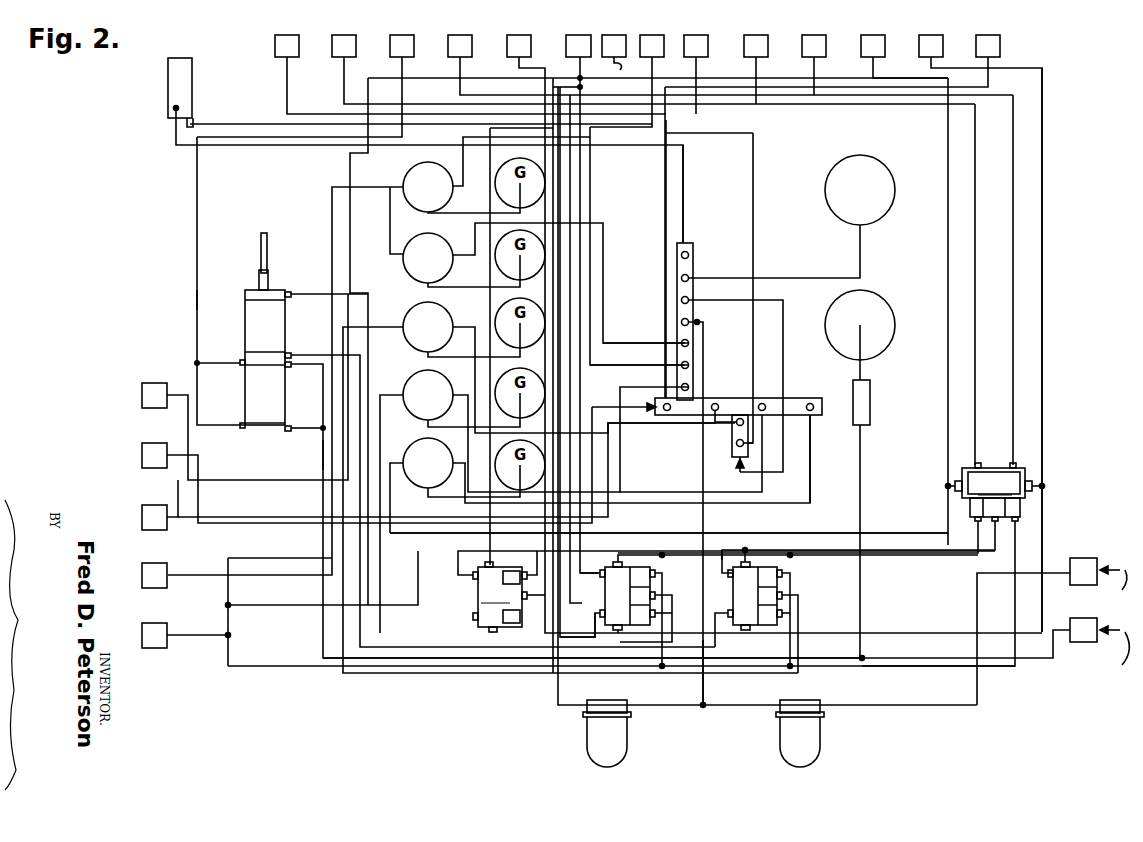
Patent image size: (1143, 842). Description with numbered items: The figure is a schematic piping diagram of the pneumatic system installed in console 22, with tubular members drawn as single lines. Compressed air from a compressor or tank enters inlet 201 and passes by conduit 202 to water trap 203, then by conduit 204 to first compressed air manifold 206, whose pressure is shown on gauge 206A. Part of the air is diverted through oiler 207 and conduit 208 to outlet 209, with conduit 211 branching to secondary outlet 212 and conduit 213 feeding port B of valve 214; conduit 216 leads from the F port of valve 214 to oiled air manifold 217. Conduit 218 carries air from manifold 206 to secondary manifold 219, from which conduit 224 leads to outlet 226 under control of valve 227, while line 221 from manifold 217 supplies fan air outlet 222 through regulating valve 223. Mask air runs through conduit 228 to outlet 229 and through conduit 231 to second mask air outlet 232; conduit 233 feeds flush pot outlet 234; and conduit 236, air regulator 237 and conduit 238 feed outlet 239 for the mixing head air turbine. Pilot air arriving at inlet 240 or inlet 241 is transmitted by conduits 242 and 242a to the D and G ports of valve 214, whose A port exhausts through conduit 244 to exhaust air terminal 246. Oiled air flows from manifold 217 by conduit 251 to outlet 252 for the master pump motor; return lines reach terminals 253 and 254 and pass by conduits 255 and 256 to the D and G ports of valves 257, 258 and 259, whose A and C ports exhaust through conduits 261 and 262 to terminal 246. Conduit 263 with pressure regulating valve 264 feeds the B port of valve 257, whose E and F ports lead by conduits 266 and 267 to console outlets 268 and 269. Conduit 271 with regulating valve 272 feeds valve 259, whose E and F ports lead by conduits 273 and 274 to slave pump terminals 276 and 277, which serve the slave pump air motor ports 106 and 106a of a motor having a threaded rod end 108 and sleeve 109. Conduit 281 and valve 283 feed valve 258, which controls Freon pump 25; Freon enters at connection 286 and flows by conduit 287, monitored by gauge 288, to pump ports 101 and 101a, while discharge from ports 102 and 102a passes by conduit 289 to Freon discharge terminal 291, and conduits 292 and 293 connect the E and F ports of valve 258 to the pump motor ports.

The console 22 is at (184, 266).
The Freon pump 25 is at (296, 342).
The Freon pump port 101 is at (291, 426).
The Freon pump port 101a is at (291, 367).
The Freon pump discharge port 102 is at (242, 429).
The Freon pump discharge port 102a is at (240, 361).
The lower air port 106 is at (291, 356).
The upper air port 106a is at (291, 293).
The upper end of rod 108 is at (267, 250).
The internally threaded sleeve 109 is at (266, 280).
The inlet 201 is at (1088, 562).
The conduit 202 is at (977, 612).
The water trap 203 is at (820, 745).
The conduit 204 is at (703, 697).
The first compressed air manifold 206 is at (694, 270).
The gauge 206A is at (880, 188).
The oiler 207 is at (627, 745).
The conduit 208 is at (548, 700).
The outlet 209 is at (579, 33).
The conduit 211 is at (350, 158).
The secondary outlet 212 is at (142, 517).
The conduit 213 is at (590, 198).
The valve 214 is at (504, 592).
The conduit 216 is at (458, 565).
The oiled air manifold 217 is at (738, 398).
The conduit 218 is at (785, 397).
The secondary manifold 219 is at (732, 445).
The line 221 is at (665, 424).
The fan air outlet 222 is at (519, 33).
The valve 223 is at (406, 262).
The conduit 224 is at (754, 202).
The outlet 226 is at (142, 575).
The valve 227 is at (447, 170).
The conduit 228 is at (655, 365).
The outlet 229 is at (142, 395).
The conduit 231 is at (655, 387).
The second mask air outlet 232 is at (142, 455).
The conduit 233 is at (655, 340).
The outlet 234 is at (460, 33).
The conduit 236 is at (684, 232).
The air regulator 237 is at (193, 78).
The conduit 238 is at (697, 105).
The outlet 239 is at (696, 33).
The inlet 240 is at (614, 33).
The inlet 241 is at (652, 33).
The conduit 242 is at (615, 84).
The conduit 242a is at (652, 95).
The conduit 244 is at (418, 605).
The exhaust air terminal 246 is at (142, 635).
The conduit 251 is at (666, 287).
The outlet 252 is at (988, 33).
The terminal 253 is at (873, 33).
The terminal 254 is at (932, 33).
The conduit 255 is at (948, 248).
The conduit 256 is at (1042, 300).
The valve 257 is at (635, 559).
The valve 258 is at (752, 590).
The valve 259 is at (625, 595).
The conduit 261 is at (990, 550).
The conduit 262 is at (930, 665).
The conduit 263 is at (783, 533).
The pressure regulating valve 264 is at (412, 452).
The conduit 266 is at (977, 428).
The conduit 267 is at (1013, 355).
The console outlet 268 is at (756, 33).
The console outlet 269 is at (814, 33).
The conduit 271 is at (672, 630).
The pressure regulating valve 272 is at (410, 390).
The conduit 273 is at (602, 637).
The conduit 274 is at (583, 585).
The slave pump terminal 276 is at (289, 33).
The slave pump terminal 277 is at (346, 33).
The conduit 281 is at (798, 625).
The valve 283 is at (412, 338).
The Freon supply connection 286 is at (1092, 620).
The conduit 287 is at (323, 457).
The gauge 288 is at (888, 328).
The conduit 289 is at (197, 300).
The Freon discharge terminal 291 is at (403, 33).
The conduit 292 is at (722, 640).
The conduit 293 is at (722, 545).